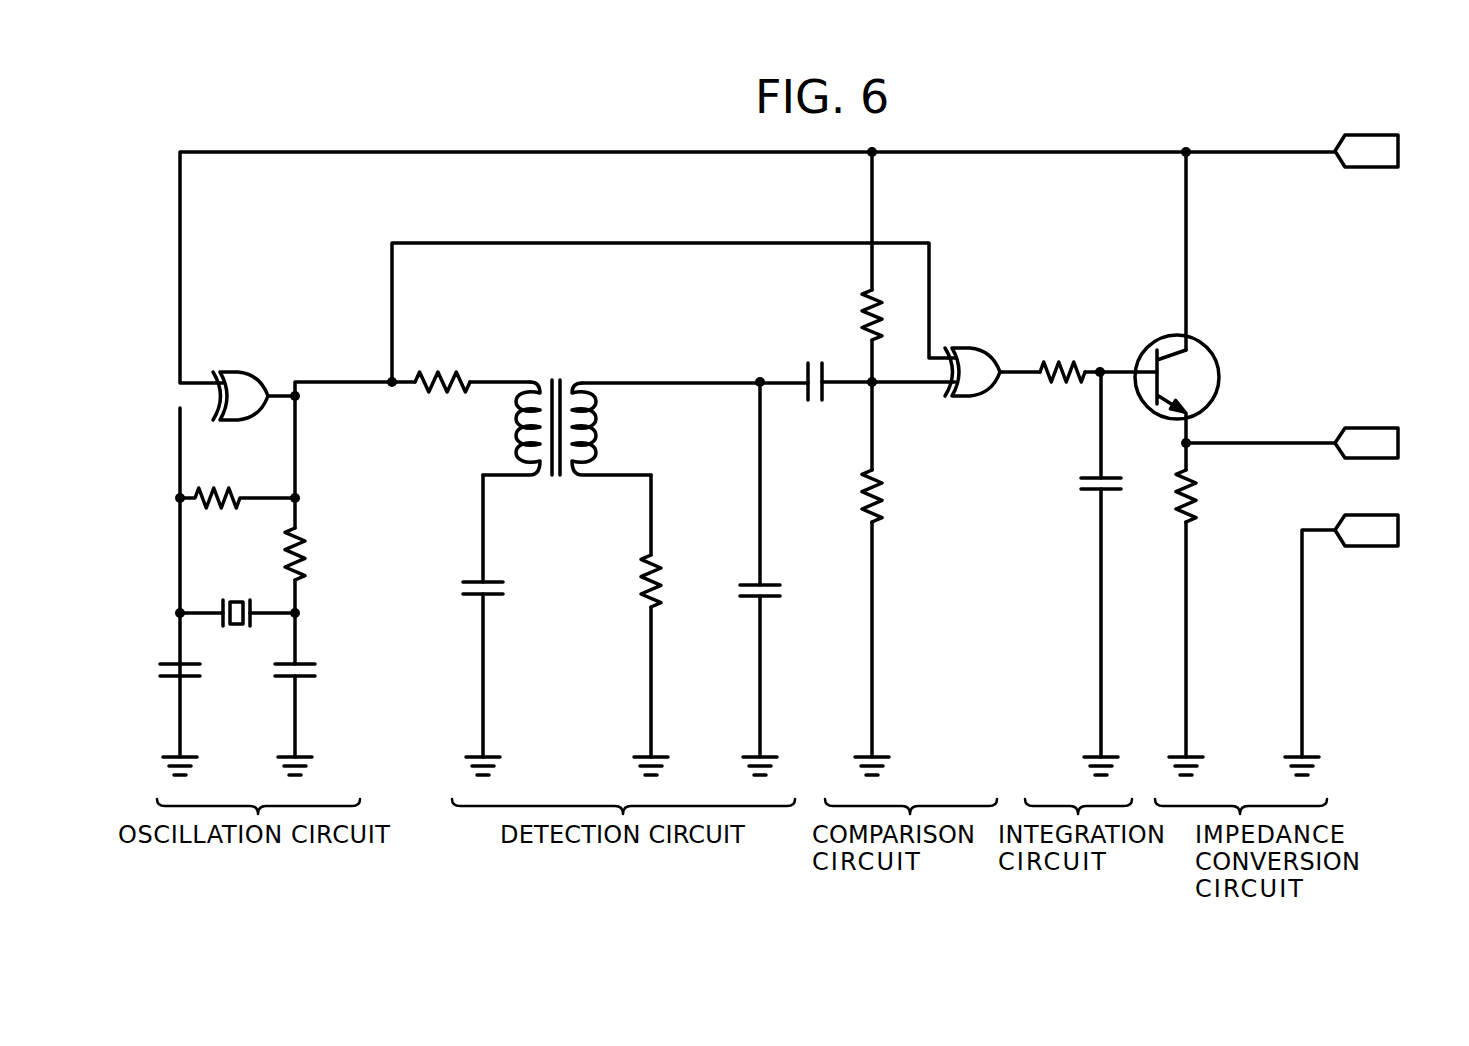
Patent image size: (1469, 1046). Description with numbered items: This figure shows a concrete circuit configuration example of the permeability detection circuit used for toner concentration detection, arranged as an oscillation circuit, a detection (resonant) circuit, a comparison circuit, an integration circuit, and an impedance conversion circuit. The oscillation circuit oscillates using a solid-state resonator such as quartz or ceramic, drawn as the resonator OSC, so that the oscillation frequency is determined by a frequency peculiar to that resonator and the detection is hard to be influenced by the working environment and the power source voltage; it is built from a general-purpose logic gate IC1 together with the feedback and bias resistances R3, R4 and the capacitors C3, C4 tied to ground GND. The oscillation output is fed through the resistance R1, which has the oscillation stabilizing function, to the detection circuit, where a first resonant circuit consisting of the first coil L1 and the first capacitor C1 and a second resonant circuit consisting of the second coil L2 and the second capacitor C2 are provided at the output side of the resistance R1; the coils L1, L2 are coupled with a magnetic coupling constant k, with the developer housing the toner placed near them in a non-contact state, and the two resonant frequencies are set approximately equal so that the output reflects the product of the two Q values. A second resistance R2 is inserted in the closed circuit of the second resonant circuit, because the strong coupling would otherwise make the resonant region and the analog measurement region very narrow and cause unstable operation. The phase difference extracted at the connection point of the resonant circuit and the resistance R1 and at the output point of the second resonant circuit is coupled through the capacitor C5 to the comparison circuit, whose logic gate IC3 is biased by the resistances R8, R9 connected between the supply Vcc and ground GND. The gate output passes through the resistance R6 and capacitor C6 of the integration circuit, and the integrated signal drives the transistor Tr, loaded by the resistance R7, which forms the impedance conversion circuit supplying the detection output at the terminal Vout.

The exclusive-OR gate (oscillation circuit) IC1 is at (240, 378).
The resistance R1 is at (442, 364).
The resistor R3 is at (237, 483).
The resistor R4 is at (314, 554).
The crystal oscillator OSC is at (233, 598).
The capacitor C3 is at (198, 672).
The capacitor C4 is at (313, 672).
The first coil L1 is at (520, 427).
The second coil L2 is at (611, 429).
The first capacitor C1 is at (467, 589).
The second resistance R2 is at (674, 581).
The second capacitor C2 is at (781, 593).
The capacitor C5 is at (815, 367).
The resistor R8 is at (890, 315).
The resistor R9 is at (897, 496).
The exclusive-OR gate (comparison circuit) IC3 is at (972, 353).
The resistor R6 is at (1062, 356).
The capacitor C6 is at (1078, 486).
The transistor Tr is at (1177, 363).
The resistor R7 is at (1209, 496).
The power supply terminal Vcc is at (1391, 151).
The output terminal Vout is at (1399, 443).
The ground terminal GND is at (1397, 530).